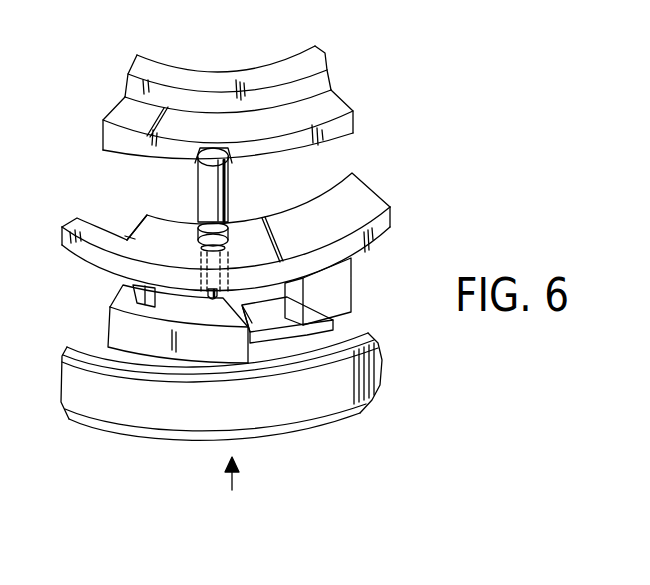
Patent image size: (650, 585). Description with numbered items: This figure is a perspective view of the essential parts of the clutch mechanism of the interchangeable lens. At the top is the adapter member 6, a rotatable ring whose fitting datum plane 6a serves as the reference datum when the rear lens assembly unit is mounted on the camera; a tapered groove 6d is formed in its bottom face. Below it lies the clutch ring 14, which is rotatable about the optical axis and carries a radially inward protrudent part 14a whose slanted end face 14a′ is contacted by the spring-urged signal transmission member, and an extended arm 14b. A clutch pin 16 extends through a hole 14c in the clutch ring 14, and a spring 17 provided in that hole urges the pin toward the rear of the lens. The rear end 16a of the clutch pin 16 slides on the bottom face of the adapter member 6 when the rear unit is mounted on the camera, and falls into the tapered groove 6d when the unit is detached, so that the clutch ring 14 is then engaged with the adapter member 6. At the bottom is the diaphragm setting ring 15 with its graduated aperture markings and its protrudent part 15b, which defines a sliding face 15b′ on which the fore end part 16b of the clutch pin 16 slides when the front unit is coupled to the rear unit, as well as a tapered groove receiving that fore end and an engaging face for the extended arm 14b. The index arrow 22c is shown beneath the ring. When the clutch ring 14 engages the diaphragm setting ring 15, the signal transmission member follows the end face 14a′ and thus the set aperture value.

The adapter member 6 is at (315, 77).
The fitting datum plane 6a is at (333, 107).
The tapered groove 6d is at (222, 147).
The clutch ring 14 is at (90, 230).
The protrudent part 14a is at (353, 200).
The end face of the protrudent part 14a′ is at (138, 237).
The extended arm 14b is at (332, 303).
The hole 14c is at (229, 242).
The diaphragm setting ring 15 is at (77, 388).
The protrudent part 15b is at (302, 333).
The sliding face 15b′ is at (190, 298).
The clutch pin 16 is at (213, 190).
The rear end of the clutch pin 16a is at (208, 156).
The fore end part of the clutch pin 16b is at (216, 300).
The spring 17 is at (128, 238).
The index 22c is at (244, 487).